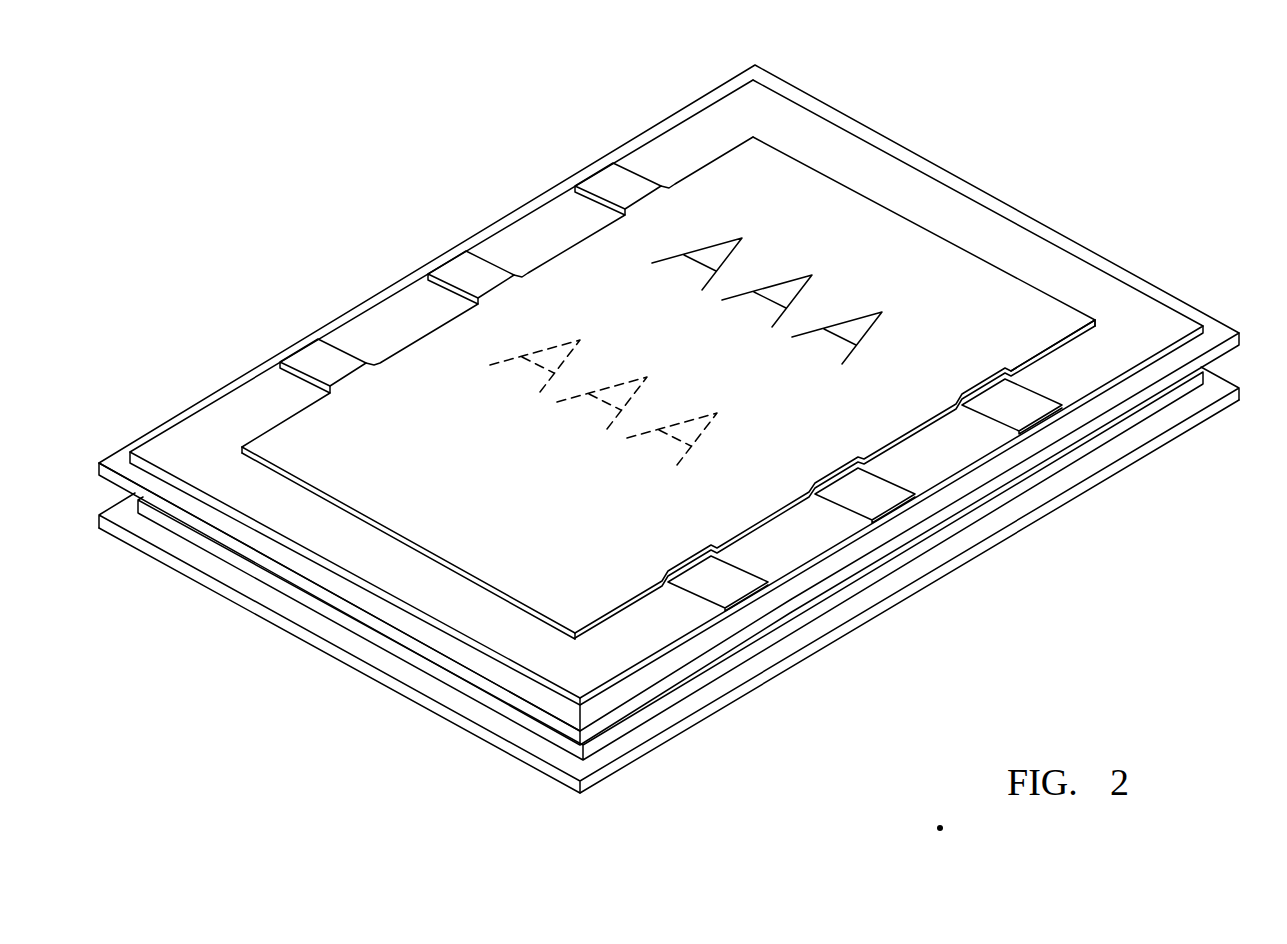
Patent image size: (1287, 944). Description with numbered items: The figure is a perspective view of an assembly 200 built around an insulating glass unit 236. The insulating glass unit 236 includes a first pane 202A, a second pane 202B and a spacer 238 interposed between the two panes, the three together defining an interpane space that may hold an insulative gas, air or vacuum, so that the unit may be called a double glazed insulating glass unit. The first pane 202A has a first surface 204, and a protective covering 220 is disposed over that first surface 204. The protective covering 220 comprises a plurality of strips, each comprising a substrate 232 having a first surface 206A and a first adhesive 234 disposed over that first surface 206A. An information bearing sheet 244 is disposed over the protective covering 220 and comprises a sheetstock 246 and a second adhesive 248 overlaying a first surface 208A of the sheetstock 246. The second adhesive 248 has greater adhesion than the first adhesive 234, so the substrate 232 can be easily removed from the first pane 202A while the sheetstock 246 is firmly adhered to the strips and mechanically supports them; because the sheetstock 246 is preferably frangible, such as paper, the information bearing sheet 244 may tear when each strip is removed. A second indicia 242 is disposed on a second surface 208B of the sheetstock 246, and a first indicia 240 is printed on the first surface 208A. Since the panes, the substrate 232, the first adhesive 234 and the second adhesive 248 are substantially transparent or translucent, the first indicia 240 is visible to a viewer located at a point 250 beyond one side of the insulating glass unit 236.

The assembly 200 is at (962, 675).
The first pane 202A is at (1203, 326).
The second pane 202B is at (1230, 403).
The first surface 204 is at (1027, 223).
The first surface 206A is at (547, 693).
The first surface 208A is at (523, 615).
The second surface 208B is at (1045, 332).
The protective covering 220 is at (915, 168).
The substrate 232 is at (610, 661).
The first adhesive 234 is at (597, 703).
The insulating glass unit 236 is at (806, 668).
The spacer 238 is at (1200, 380).
The first indicia 240 is at (542, 352).
The second indicia 242 is at (875, 333).
The information bearing sheet 244 is at (931, 230).
The sheetstock 246 is at (813, 190).
The second adhesive 248 is at (472, 582).
The point 250 is at (942, 828).